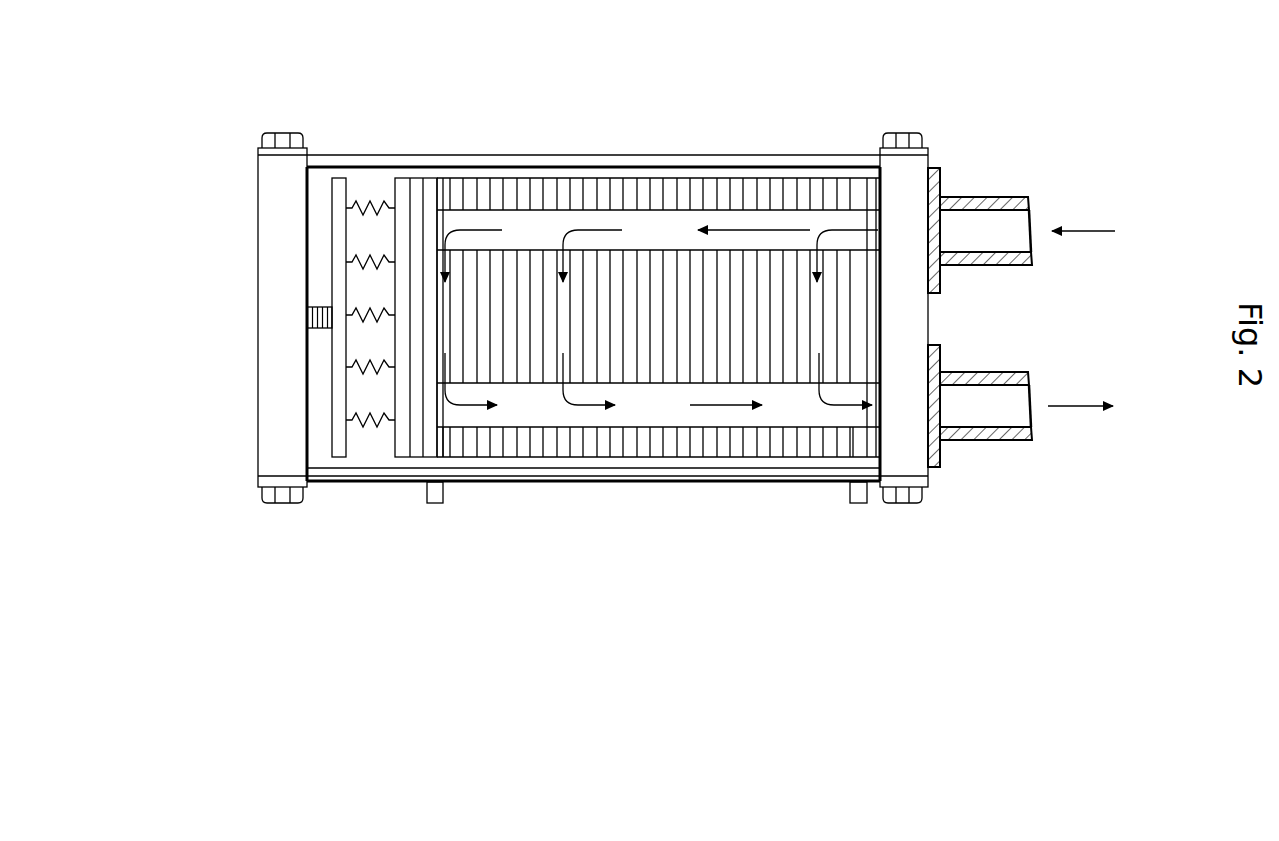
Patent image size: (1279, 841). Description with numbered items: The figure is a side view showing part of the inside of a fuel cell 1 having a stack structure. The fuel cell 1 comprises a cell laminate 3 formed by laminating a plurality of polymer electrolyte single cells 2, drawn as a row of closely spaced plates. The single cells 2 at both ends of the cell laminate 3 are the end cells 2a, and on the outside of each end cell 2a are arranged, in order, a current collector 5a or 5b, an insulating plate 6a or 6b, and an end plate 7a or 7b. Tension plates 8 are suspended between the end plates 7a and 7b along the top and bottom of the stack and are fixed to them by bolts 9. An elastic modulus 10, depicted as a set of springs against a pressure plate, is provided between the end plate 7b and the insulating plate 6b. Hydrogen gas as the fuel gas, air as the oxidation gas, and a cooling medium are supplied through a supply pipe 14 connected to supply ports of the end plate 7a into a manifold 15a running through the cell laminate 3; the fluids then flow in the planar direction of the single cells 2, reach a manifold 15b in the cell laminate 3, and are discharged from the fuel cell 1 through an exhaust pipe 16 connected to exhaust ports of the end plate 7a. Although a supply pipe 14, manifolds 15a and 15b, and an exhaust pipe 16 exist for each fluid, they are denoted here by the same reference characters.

The fuel cell 1 is at (492, 608).
The single cells 2 is at (577, 447).
The end cells 2a is at (445, 447).
The cell laminate 3 is at (448, 584).
The current collector 5a is at (858, 187).
The current collector 5b is at (432, 185).
The insulating plate 6a is at (872, 187).
The insulating plate 6b is at (418, 195).
The end plate 7a is at (912, 190).
The end plate 7b is at (275, 228).
The tension plates 8 is at (705, 162).
The bolts 9 is at (283, 140).
The elastic modulus 10 is at (373, 196).
The supply pipe 14 is at (1012, 267).
The manifold 15a is at (645, 228).
The manifold 15b is at (527, 407).
The exhaust pipe 16 is at (1012, 440).